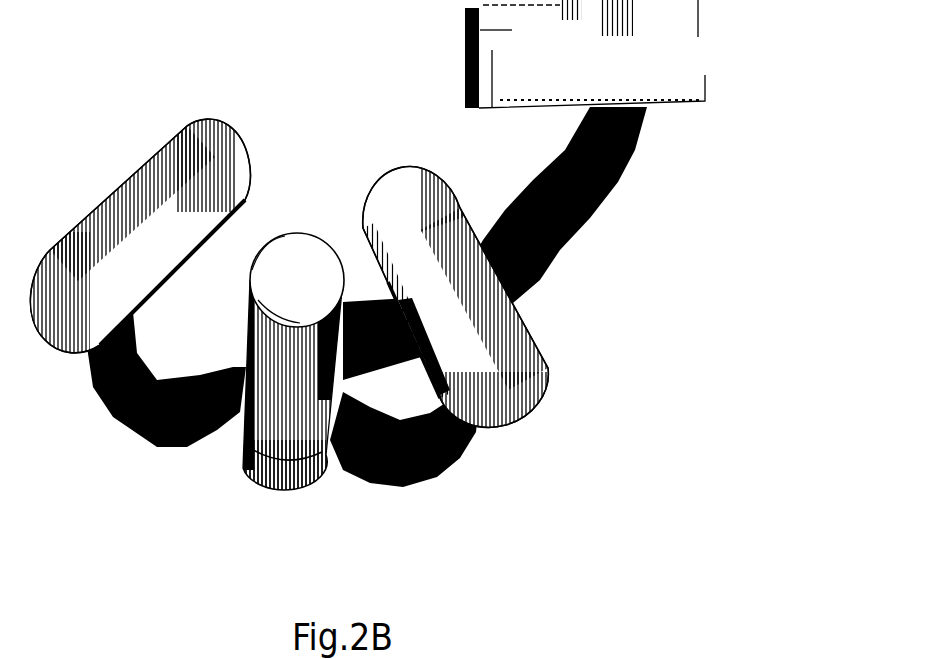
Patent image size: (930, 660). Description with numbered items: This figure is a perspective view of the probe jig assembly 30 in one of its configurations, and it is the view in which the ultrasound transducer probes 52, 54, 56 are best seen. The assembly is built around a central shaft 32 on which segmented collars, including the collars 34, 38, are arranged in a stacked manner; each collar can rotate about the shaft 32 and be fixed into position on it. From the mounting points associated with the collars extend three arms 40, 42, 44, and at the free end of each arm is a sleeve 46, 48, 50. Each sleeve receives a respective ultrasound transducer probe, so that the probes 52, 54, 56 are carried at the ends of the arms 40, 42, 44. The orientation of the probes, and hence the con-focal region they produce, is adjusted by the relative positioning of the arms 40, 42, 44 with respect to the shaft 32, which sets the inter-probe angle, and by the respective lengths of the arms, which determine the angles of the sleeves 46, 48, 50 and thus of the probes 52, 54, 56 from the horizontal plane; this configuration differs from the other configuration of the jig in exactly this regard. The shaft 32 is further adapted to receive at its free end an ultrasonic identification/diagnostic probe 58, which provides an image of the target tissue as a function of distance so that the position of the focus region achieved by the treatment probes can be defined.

The jig assembly 30 is at (146, 110).
The central shaft 32 is at (264, 482).
The segmented collar 34 is at (299, 461).
The segmented collar 38 is at (281, 357).
The arm 40 is at (118, 419).
The arm 42 is at (447, 470).
The arm 44 is at (600, 200).
The sleeve 46 is at (148, 211).
The sleeve 48 is at (540, 347).
The sleeve 50 is at (586, 54).
The ultrasound transducer probe 52 is at (482, 267).
The ultrasound transducer probe 54 is at (201, 150).
The ultrasound transducer probe 56 is at (480, 30).
The ultrasonic identification/diagnostic probe 58 is at (286, 282).